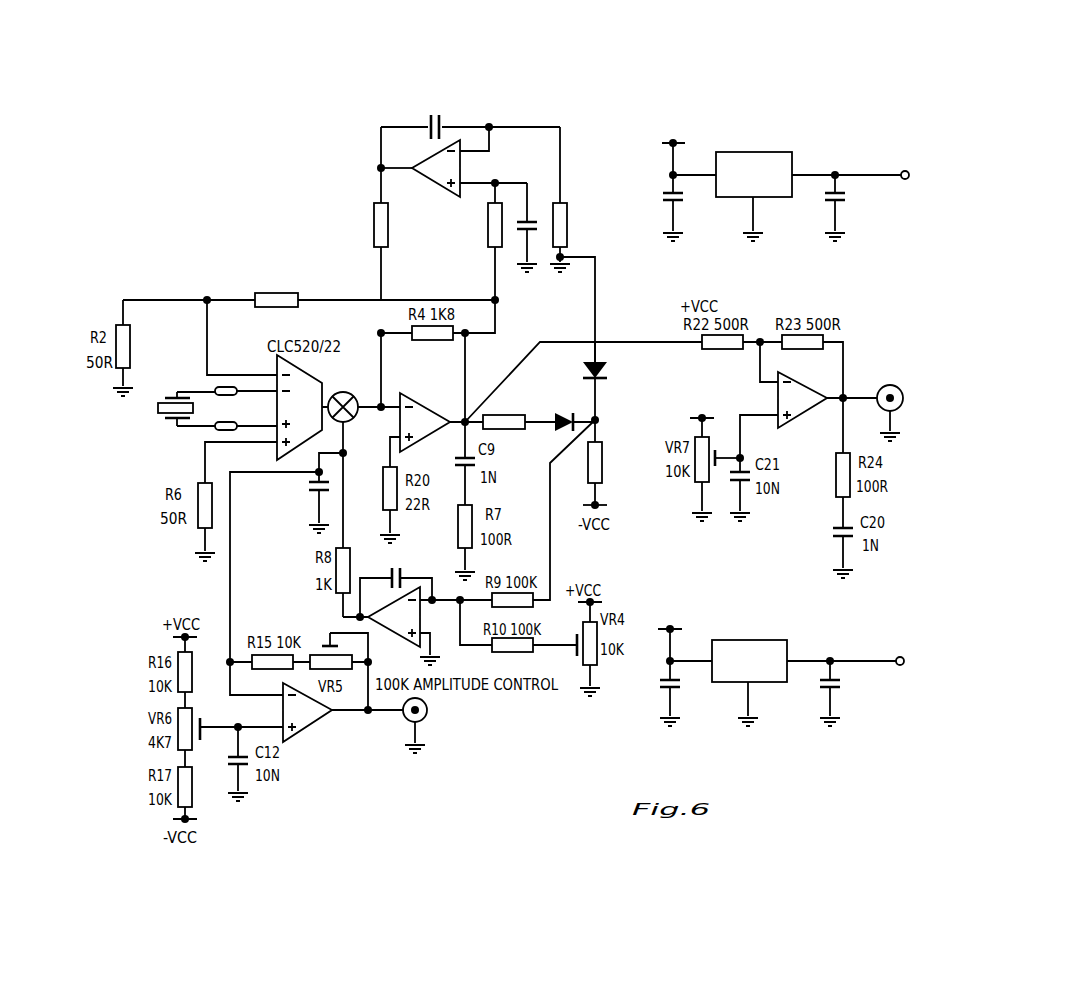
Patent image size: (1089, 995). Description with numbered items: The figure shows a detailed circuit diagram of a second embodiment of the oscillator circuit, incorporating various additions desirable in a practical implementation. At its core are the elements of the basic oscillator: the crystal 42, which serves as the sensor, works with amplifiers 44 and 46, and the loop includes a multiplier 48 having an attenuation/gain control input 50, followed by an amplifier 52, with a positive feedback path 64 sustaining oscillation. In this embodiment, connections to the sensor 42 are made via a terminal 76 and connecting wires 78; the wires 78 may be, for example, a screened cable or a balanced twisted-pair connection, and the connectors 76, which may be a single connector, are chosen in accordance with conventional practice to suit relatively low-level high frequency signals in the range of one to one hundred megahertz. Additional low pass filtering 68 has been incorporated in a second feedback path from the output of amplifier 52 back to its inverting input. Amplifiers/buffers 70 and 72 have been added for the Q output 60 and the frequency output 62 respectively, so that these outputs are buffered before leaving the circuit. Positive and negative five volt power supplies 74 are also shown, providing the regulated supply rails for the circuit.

The crystal 42 is at (157, 408).
The amplifier 44 is at (321, 435).
The amplifier 46 is at (321, 403).
The multiplier 48 is at (340, 391).
The attenuation/gain control input 50 is at (348, 431).
The amplifier 52 is at (418, 417).
The Q output 60 is at (403, 723).
The frequency output 62 is at (894, 378).
The positive feedback path 64 is at (232, 297).
The low pass filtering 68 is at (530, 116).
The amplifier/buffer 70 is at (309, 716).
The amplifier/buffer 72 is at (796, 403).
The power supplies 74 is at (762, 149).
The terminal 76 is at (243, 418).
The connecting wires 78 is at (199, 424).